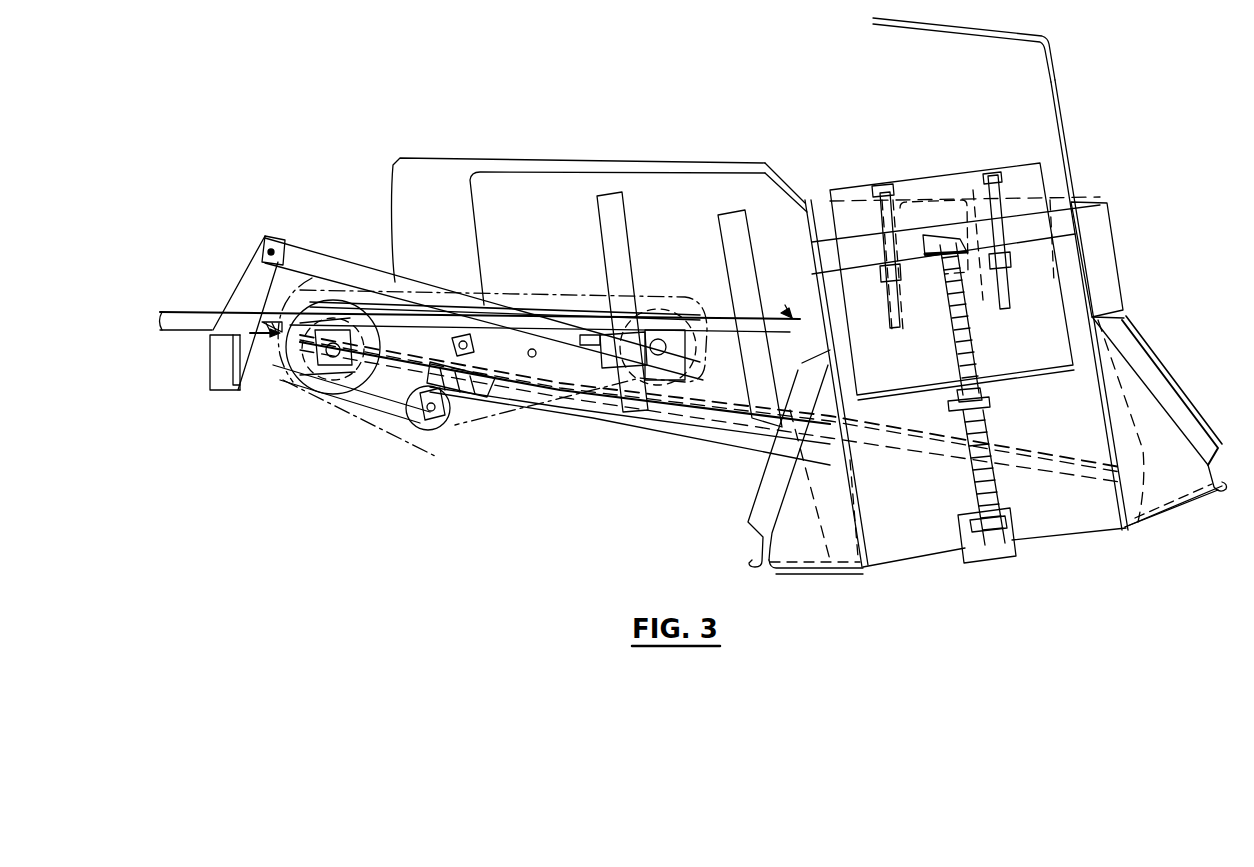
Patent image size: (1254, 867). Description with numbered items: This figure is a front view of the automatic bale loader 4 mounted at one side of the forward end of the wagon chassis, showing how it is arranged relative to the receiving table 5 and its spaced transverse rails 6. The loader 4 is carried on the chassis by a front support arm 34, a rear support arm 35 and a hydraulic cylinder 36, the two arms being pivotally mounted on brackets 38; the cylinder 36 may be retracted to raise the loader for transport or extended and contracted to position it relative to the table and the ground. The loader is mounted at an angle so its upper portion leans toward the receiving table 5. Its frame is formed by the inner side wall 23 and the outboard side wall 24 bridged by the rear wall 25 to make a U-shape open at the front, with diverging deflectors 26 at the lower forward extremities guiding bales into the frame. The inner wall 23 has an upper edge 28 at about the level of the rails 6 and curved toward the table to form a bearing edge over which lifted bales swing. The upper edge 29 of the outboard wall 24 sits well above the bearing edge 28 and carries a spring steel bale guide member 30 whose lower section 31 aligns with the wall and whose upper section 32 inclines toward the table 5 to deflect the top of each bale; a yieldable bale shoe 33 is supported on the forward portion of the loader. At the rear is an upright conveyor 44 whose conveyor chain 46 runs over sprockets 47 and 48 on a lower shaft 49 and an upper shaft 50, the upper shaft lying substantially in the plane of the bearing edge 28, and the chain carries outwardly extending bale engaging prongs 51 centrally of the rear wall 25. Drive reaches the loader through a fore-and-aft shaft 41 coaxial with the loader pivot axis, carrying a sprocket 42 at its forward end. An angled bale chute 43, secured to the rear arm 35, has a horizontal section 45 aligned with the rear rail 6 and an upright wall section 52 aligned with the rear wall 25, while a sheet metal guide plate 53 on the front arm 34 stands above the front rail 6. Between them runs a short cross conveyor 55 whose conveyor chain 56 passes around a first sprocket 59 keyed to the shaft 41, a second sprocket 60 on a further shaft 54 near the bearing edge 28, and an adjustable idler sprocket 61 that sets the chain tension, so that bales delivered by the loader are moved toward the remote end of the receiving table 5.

The bale loader 4 is at (1130, 187).
The receiving table 5 is at (212, 310).
The transverse rails 6 is at (190, 331).
The inner side wall 23 is at (855, 480).
The outboard side wall 24 is at (1100, 400).
The rear wall 25 is at (1080, 533).
The diverging deflectors 26 is at (810, 573).
The bearing edge 28 is at (778, 298).
The upper edge 29 is at (1070, 197).
The bale guide member 30 is at (1067, 140).
The lower section 31 is at (1061, 105).
The upper section 32 is at (943, 30).
The yieldable bale shoe 33 is at (1090, 303).
The front support arm 34 is at (705, 447).
The rear support arm 35 is at (925, 430).
The hydraulic cylinder 36 is at (343, 259).
The brackets 38 is at (257, 390).
The fore-and-aft extending shaft 41 is at (330, 386).
The sprocket 42 is at (304, 390).
The angled bale chute 43 is at (432, 160).
The upright conveyor 44 is at (968, 355).
The horizontal section 45 is at (704, 350).
The conveyor chain 46 is at (985, 432).
The lower sprocket 47 is at (998, 494).
The upper sprocket 48 is at (962, 322).
The lower shaft 49 is at (968, 502).
The upper shaft 50 is at (925, 298).
The bale engaging prongs 51 is at (936, 236).
The upright wall section 52 is at (580, 172).
The sheet metal guide plate 53 is at (735, 170).
The further shaft 54 is at (667, 373).
The cross conveyor 55 is at (516, 294).
The conveyor chain 56 is at (510, 412).
The first sprocket 59 is at (352, 378).
The second sprocket 60 is at (643, 360).
The idler sprocket 61 is at (468, 425).